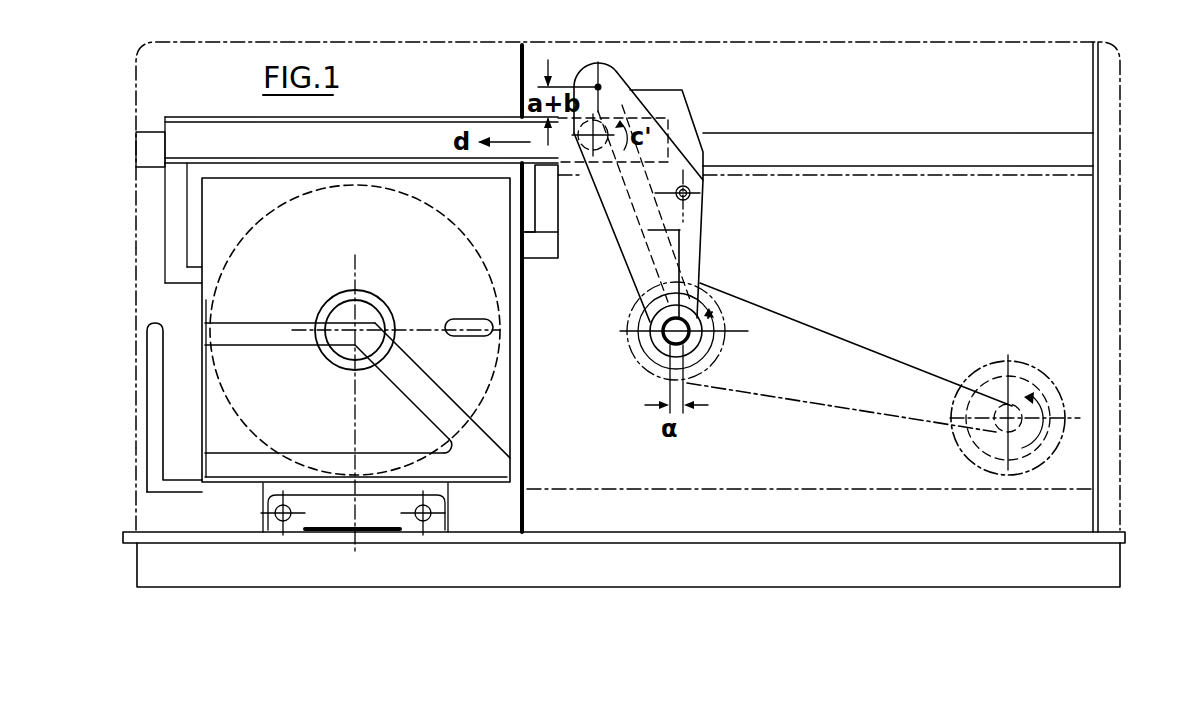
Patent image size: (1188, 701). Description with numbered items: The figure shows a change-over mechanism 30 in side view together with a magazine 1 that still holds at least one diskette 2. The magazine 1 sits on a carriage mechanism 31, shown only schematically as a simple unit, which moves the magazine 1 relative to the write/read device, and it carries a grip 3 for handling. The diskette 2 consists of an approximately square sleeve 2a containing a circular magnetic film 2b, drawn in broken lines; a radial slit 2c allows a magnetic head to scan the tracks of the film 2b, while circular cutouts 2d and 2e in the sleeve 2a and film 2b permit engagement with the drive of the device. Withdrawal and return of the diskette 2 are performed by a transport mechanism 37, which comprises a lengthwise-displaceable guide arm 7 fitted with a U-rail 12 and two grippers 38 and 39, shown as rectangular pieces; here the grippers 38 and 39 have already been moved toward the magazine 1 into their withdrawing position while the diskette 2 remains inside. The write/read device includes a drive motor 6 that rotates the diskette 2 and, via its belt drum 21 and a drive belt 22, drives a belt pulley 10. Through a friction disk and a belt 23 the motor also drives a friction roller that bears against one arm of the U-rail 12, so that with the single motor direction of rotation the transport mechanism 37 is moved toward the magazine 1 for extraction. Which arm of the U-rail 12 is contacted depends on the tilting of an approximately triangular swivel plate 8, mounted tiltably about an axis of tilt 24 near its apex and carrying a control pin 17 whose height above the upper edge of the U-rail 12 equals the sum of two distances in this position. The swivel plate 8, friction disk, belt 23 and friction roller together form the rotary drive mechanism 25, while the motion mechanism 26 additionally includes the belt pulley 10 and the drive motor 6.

The magazine 1 is at (248, 465).
The diskette 2 is at (258, 290).
The sleeve 2a is at (212, 233).
The magnetic film 2b is at (312, 205).
The radial slit 2c is at (470, 337).
The circular cutout in sleeve 2d is at (325, 298).
The circular cutout in film 2e is at (373, 295).
The grip 3 is at (155, 410).
The drive motor 6 is at (1005, 455).
The guide arm 7 is at (248, 140).
The swivel plate 8 is at (643, 262).
The belt pulley 10 is at (703, 362).
The U-rail 12 is at (363, 120).
The control pin 17 is at (598, 87).
The belt drum 21 is at (1000, 420).
The drive belt 22 is at (823, 330).
The belt 23 is at (680, 230).
The axis of tilt 24 is at (692, 195).
The rotary drive mechanism 25 is at (690, 265).
The motion mechanism 26 is at (682, 133).
The change-over mechanism 30 is at (1128, 132).
The carriage mechanism 31 is at (383, 517).
The transport mechanism 37 is at (177, 75).
The gripper 38 is at (177, 213).
The gripper 39 is at (548, 208).